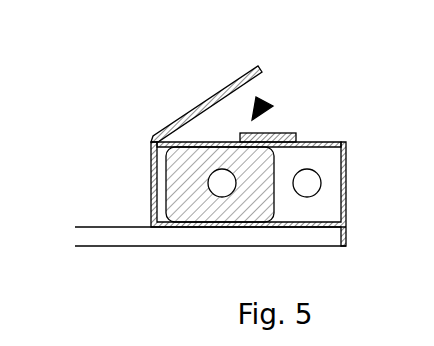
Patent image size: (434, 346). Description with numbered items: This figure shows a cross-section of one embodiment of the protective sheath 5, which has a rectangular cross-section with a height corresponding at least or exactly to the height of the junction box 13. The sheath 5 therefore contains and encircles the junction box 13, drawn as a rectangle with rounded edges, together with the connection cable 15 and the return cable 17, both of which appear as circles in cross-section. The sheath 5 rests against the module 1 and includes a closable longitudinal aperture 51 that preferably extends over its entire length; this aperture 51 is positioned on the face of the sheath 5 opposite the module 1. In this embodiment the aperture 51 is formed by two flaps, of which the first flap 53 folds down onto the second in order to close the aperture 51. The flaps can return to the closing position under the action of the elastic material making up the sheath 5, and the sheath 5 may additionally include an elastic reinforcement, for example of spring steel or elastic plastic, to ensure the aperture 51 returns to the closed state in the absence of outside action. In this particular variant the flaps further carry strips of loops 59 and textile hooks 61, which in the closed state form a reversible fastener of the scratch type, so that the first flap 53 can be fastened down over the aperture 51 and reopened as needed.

The module 1 is at (92, 227).
The protective sheath 5 is at (149, 183).
The junction box 13 is at (165, 229).
The connection cable 15 is at (222, 197).
The return cable 17 is at (306, 197).
The closable longitudinal aperture 51 is at (268, 98).
The first flap 53 is at (178, 117).
The strips of loops 59 is at (318, 142).
The textile hooks 61 is at (229, 87).